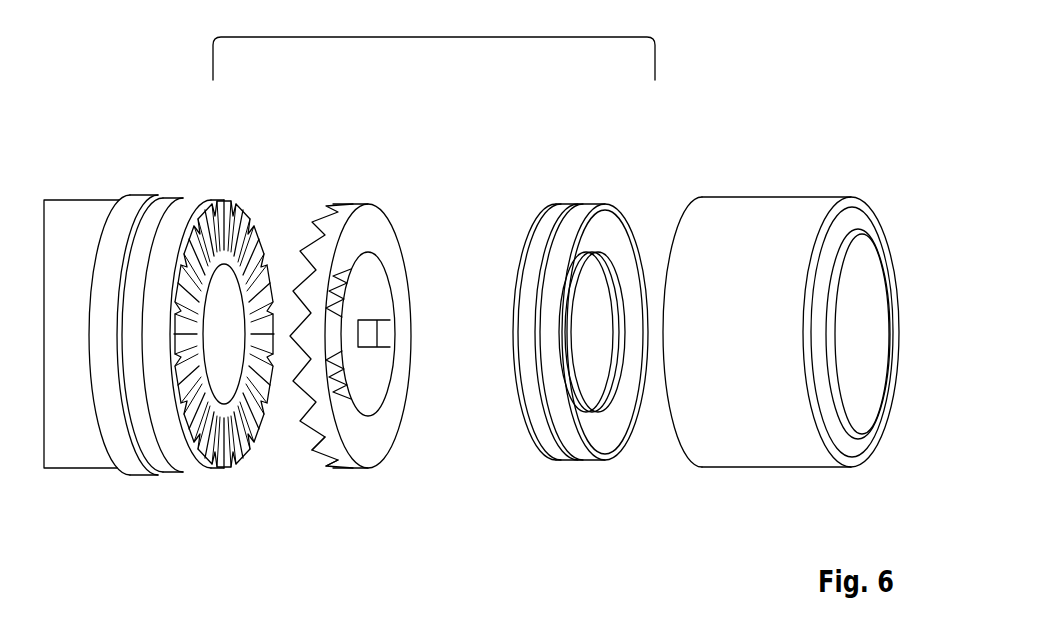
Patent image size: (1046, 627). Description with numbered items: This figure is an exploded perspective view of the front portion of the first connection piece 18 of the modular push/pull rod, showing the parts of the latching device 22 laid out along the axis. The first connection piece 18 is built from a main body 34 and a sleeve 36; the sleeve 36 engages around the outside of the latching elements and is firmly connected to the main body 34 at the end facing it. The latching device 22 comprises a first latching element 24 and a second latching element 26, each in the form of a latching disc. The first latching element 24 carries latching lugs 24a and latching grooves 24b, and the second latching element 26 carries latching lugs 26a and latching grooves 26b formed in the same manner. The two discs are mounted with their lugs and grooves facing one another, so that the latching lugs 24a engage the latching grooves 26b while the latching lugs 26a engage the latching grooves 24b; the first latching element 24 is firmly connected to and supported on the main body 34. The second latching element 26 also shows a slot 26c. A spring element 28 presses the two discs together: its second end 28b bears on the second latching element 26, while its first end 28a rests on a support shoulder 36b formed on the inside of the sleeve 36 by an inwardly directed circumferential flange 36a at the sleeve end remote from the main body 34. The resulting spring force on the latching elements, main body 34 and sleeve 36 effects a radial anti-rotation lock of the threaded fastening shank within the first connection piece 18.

The first connection piece 18 is at (88, 476).
The latching device 22 is at (436, 37).
The first latching element 24 is at (255, 273).
The latching lugs 24a is at (252, 225).
The latching grooves 24b is at (186, 280).
The second latching element 26 is at (401, 340).
The latching lugs 26a is at (313, 226).
The latching grooves 26b is at (312, 424).
The keyway slot 26c is at (378, 335).
The spring element 28 is at (611, 272).
The first end 28a is at (618, 236).
The second end 28b is at (528, 232).
The main body 34 is at (73, 212).
The sleeve 36 is at (815, 296).
The circumferential flange 36a is at (862, 443).
The support shoulder 36b is at (880, 338).